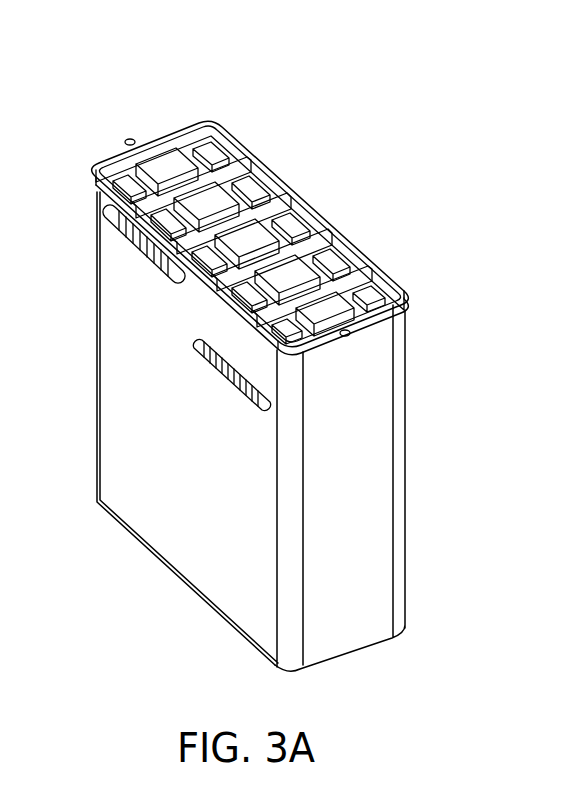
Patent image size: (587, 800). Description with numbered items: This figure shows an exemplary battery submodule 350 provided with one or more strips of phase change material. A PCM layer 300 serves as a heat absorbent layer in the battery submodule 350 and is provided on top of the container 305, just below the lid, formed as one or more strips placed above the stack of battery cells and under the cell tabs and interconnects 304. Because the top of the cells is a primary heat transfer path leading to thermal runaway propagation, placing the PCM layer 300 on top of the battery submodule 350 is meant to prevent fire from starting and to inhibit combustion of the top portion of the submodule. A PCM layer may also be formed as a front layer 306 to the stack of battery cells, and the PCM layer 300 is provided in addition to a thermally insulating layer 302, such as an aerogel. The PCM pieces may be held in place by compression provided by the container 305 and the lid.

The battery submodule 350 is at (112, 46).
The PCM layer 300 is at (103, 207).
The thermally insulating layer 302 is at (150, 258).
The cell tabs and interconnects 304 is at (238, 143).
The container 305 is at (183, 552).
The front layer 306 is at (345, 625).